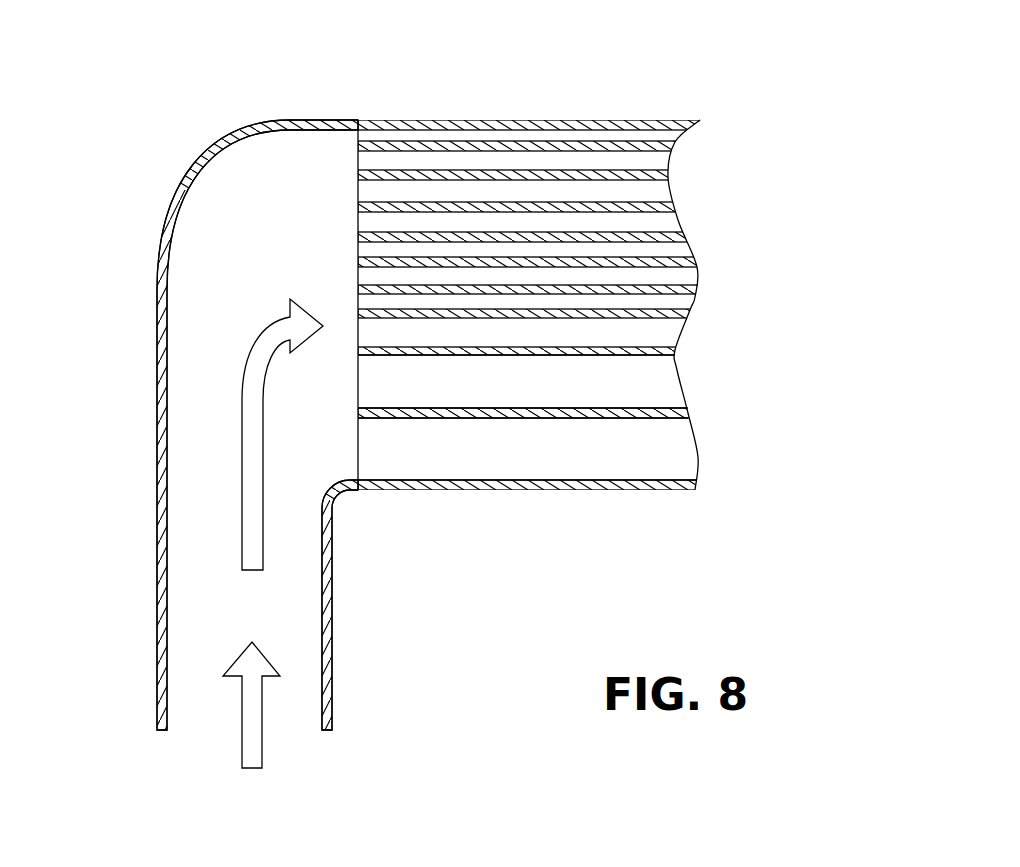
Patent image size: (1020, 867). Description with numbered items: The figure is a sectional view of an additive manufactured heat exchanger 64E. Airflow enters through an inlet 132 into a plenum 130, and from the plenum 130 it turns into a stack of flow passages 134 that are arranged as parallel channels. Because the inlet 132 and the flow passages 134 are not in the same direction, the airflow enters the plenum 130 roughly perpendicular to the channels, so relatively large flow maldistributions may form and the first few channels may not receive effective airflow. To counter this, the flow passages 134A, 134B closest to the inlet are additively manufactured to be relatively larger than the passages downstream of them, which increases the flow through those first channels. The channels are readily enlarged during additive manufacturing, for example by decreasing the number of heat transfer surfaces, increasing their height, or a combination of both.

The additive manufactured heat exchanger 64E is at (740, 85).
The plenum 130 is at (181, 178).
The inlet 132 is at (334, 614).
The flow passages 134 is at (677, 273).
The flow passage 134A is at (668, 458).
The flow passage 134B is at (655, 377).